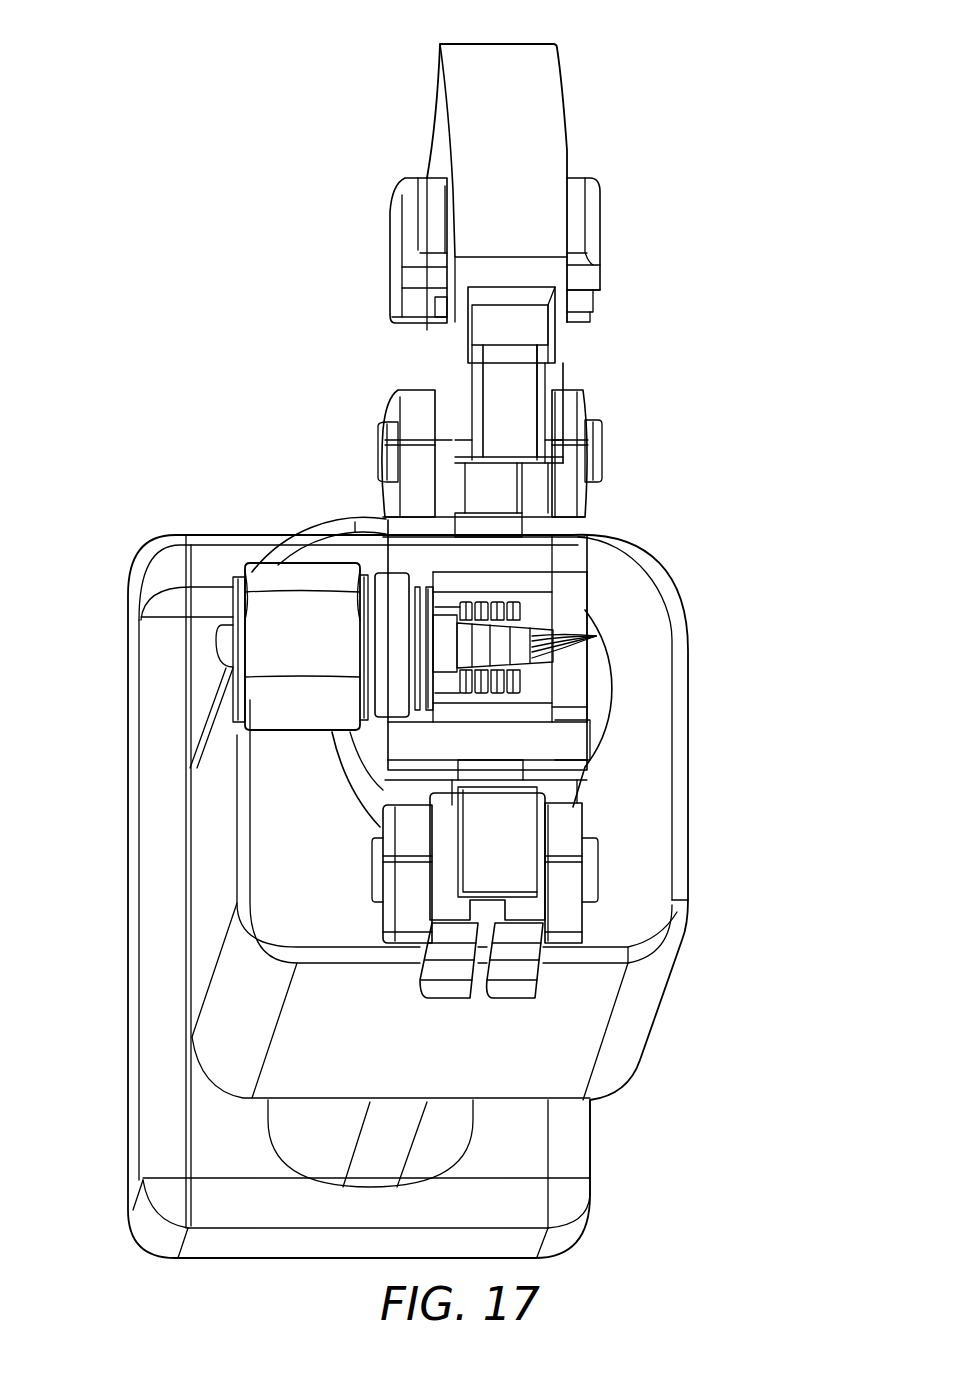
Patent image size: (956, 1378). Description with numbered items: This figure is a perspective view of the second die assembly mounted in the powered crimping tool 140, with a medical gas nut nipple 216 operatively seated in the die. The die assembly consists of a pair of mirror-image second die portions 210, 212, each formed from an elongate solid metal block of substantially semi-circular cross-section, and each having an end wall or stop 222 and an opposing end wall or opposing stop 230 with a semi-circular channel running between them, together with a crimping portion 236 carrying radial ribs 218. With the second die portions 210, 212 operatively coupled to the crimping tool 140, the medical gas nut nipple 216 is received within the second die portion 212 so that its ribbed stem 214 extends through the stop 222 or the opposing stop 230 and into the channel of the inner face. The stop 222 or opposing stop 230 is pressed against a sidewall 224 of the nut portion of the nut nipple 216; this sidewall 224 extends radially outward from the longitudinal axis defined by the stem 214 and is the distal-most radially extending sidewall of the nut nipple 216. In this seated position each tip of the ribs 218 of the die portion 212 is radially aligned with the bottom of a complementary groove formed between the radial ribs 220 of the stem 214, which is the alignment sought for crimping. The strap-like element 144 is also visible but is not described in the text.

The crimping tool 140 is at (162, 1069).
The strap 144 is at (513, 70).
The second die portion 210 is at (601, 248).
The second die portion 212 is at (586, 555).
The ribbed stem 214 is at (443, 635).
The medical gas nut nipple 216 is at (222, 710).
The radial ribs 218 is at (462, 602).
The radial ribs 220 is at (596, 636).
The stop 222 is at (397, 714).
The sidewall 224 is at (457, 605).
The opposing stop 230 is at (553, 714).
The crimping portion 236 is at (536, 614).